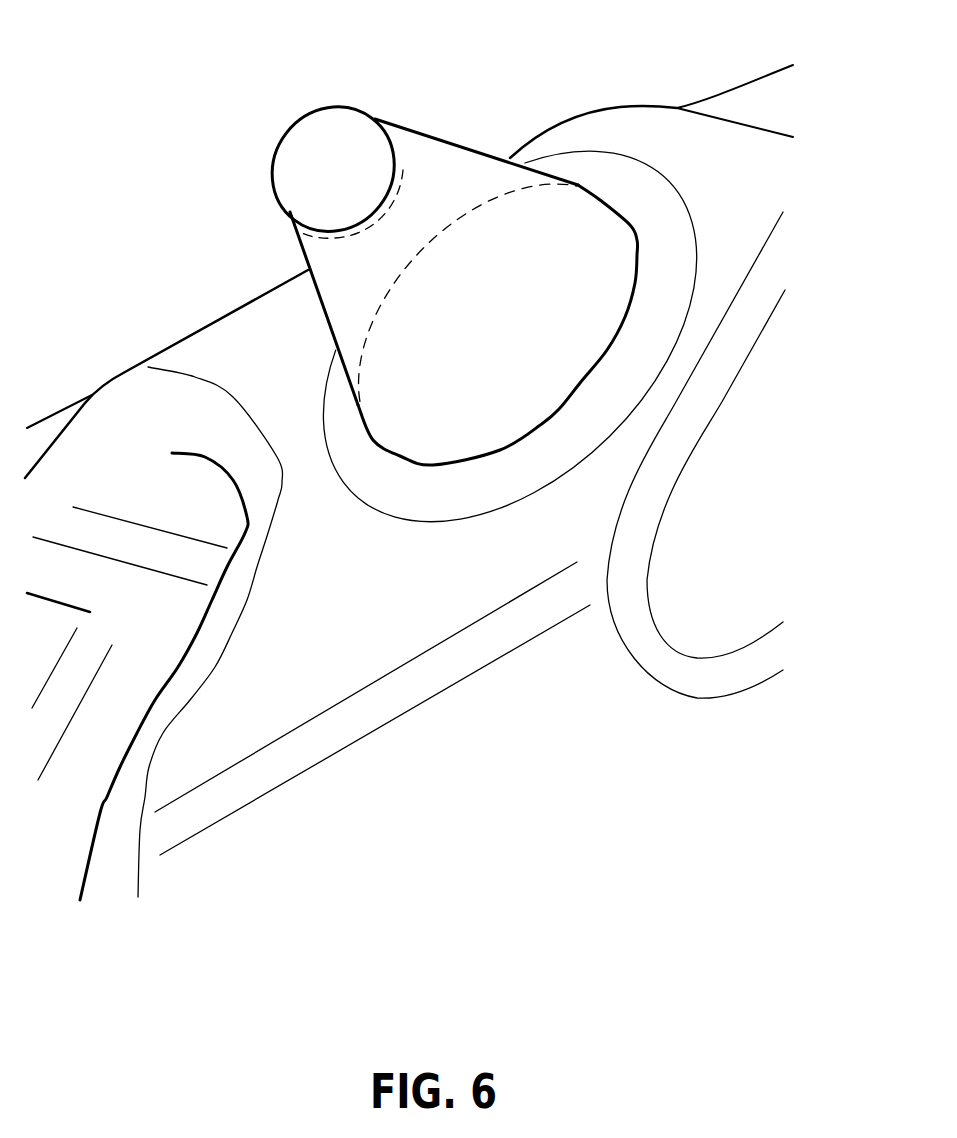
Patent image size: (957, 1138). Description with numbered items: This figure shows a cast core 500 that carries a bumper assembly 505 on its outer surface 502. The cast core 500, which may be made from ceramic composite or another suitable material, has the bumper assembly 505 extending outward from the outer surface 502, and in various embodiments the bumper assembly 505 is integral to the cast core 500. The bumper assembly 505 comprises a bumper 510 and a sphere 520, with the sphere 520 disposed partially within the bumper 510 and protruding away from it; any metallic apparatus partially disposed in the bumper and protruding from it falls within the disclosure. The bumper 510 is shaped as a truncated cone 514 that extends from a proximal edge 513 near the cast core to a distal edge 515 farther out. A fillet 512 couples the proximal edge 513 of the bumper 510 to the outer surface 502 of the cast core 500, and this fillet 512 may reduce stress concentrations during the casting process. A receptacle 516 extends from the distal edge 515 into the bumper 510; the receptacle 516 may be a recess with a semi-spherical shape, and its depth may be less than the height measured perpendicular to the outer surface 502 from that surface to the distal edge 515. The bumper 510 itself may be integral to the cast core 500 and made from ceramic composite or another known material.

The cast core 500 is at (342, 625).
The outer surface 502 is at (509, 599).
The bumper assembly 505 is at (298, 73).
The bumper 510 is at (499, 312).
The fillet 512 is at (603, 171).
The proximal edge 513 is at (637, 240).
The truncated cone 514 is at (477, 205).
The distal edge 515 is at (393, 163).
The receptacle 516 is at (337, 240).
The sphere 520 is at (323, 167).